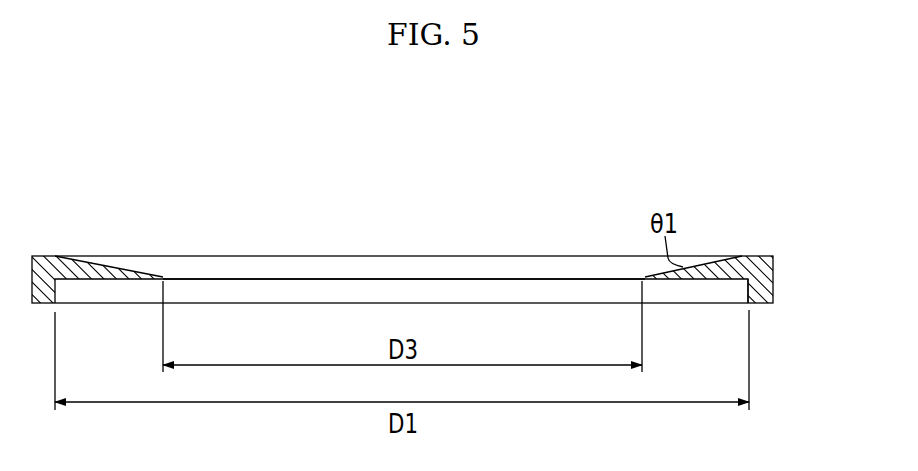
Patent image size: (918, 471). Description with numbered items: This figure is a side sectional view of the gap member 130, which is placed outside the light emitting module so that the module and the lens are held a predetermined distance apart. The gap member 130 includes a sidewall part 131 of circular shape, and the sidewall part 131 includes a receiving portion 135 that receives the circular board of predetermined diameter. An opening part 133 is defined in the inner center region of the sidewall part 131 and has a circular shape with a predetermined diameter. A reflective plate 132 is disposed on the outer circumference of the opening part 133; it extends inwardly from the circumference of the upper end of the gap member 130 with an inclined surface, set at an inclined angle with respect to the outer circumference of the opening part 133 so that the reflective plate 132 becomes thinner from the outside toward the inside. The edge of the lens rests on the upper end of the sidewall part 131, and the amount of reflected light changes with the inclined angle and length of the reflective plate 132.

The gap member 130 is at (430, 240).
The sidewall part 131 is at (763, 283).
The reflective plate 132 is at (709, 262).
The opening part 133 is at (450, 278).
The receiving portion 135 is at (737, 293).